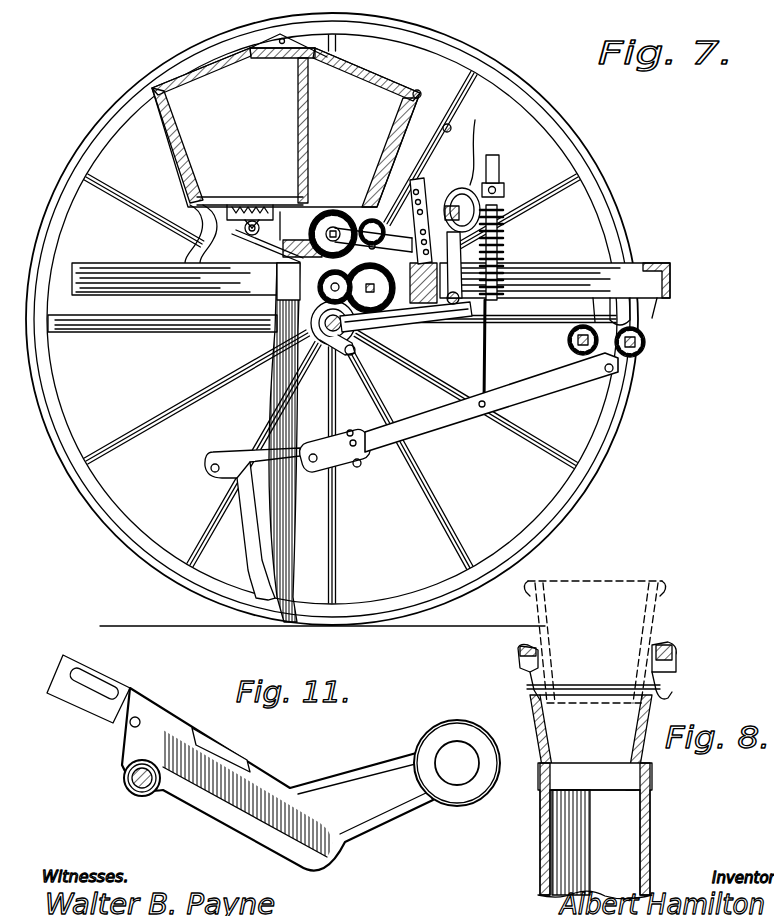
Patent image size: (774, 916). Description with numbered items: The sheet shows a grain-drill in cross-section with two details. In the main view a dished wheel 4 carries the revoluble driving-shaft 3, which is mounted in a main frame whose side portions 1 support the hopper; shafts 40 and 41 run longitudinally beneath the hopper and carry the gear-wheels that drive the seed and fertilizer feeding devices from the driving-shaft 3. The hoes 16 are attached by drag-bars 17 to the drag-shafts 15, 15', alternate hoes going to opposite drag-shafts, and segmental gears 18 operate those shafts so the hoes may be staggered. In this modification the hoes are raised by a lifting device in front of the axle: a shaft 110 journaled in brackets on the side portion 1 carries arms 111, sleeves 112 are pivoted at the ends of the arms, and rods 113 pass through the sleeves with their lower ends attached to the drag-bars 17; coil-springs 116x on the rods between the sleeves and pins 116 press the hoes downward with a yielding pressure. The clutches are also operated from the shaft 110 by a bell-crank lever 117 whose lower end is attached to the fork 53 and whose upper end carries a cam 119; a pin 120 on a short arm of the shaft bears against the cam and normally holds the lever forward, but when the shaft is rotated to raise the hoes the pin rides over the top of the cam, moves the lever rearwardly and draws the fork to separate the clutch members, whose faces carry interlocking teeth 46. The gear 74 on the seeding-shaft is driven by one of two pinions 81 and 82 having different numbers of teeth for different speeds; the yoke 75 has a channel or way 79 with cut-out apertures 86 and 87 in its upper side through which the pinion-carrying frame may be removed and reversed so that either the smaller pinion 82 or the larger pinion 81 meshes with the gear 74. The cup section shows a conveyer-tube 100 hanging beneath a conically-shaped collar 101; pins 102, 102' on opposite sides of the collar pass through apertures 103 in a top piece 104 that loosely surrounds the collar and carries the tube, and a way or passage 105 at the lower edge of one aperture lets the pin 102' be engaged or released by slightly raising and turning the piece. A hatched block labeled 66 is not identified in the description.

In FIG. 7, the side portions 1 is at (562, 294).
In FIG. 7, the driving-shaft 3 is at (284, 442).
In FIG. 7, the wheels 4 is at (557, 513).
In FIG. 7, the drag-shaft 15 is at (649, 350).
In FIG. 7, the drag-shaft 15' is at (562, 345).
In FIG. 7, the hoes 16 is at (252, 524).
In FIG. 7, the drag-bars 17 is at (442, 418).
In FIG. 7, the segmental gears 18 is at (652, 328).
In FIG. 7, the shaft 40 is at (340, 226).
In FIG. 7, the shaft 41 is at (258, 262).
In FIG. 7, the clutch teeth 46 is at (342, 348).
In FIG. 7, the fork 53 is at (325, 348).
In FIG. 7, the block 66 is at (423, 283).
In FIG. 7, the gear 74 is at (333, 222).
In FIG. 11, the yoke 75 is at (460, 795).
In FIG. 11, the channel or way 79 is at (242, 803).
In FIG. 7, the pinion 81 is at (356, 288).
In FIG. 7, the pinion 82 is at (372, 239).
In FIG. 11, the cut-out portion or aperture 86 is at (190, 740).
In FIG. 11, the cut-out portion or aperture 87 is at (262, 778).
In FIG. 7, the conveyer-tube 100 is at (275, 333).
In FIG. 8, the conveyer-tube 100 is at (595, 831).
In FIG. 7, the conically-shaped collar 101 is at (286, 148).
In FIG. 8, the conically-shaped collar 101 is at (594, 642).
In FIG. 7, the pin or lug 102 is at (274, 237).
In FIG. 8, the pin or lug 102 is at (501, 663).
In FIG. 8, the pin or lug 102' is at (691, 657).
In FIG. 8, the apertures 103 is at (532, 686).
In FIG. 7, the top piece 104 is at (278, 297).
In FIG. 8, the top piece 104 is at (610, 745).
In FIG. 7, the way or passage 105 is at (175, 279).
In FIG. 8, the way or passage 105 is at (670, 700).
In FIG. 7, the shaft 110 is at (443, 188).
In FIG. 7, the arms 111 is at (478, 146).
In FIG. 7, the sleeves 112 is at (500, 196).
In FIG. 7, the rods 113 is at (480, 350).
In FIG. 7, the pins 116 is at (434, 320).
In FIG. 7, the coil-springs 116x is at (500, 262).
In FIG. 7, the bell-crank lever 117 is at (412, 412).
In FIG. 7, the cam 119 is at (430, 193).
In FIG. 7, the pin 120 is at (482, 144).